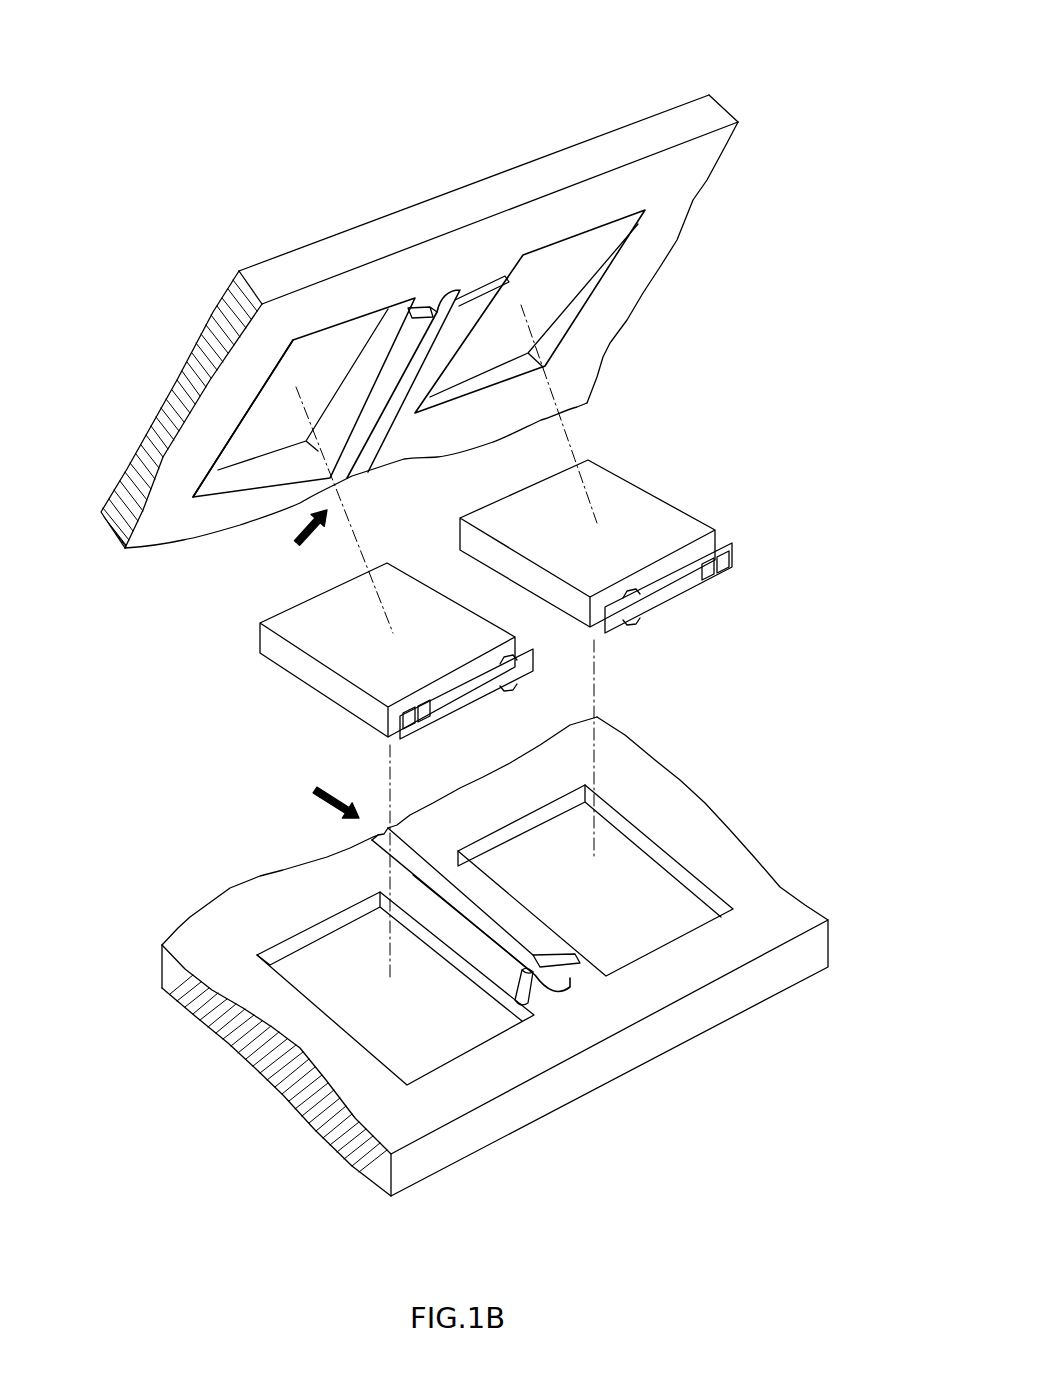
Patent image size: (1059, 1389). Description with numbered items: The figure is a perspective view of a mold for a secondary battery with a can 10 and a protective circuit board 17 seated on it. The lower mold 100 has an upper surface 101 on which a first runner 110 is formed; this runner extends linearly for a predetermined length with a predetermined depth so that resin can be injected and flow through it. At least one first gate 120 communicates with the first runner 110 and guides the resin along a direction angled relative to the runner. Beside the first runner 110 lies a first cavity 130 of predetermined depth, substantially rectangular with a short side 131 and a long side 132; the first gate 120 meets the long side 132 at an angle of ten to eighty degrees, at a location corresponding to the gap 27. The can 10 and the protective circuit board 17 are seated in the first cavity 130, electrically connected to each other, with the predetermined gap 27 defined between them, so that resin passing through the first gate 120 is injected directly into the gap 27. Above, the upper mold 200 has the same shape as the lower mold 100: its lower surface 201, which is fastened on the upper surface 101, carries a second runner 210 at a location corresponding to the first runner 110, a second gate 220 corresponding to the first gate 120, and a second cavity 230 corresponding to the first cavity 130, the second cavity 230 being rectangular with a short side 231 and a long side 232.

The upper mold 200 is at (729, 103).
The lower surface 201 is at (671, 193).
The second runner 210 is at (466, 285).
The second gate 220 is at (427, 305).
The second cavity 230 is at (315, 355).
The short side 231 is at (367, 289).
The long side 232 is at (263, 383).
The can 10 is at (633, 500).
The gap 27 is at (718, 533).
The protective circuit board 17 is at (687, 597).
The lower mold 100 is at (733, 830).
The upper surface 101 is at (663, 805).
The first runner 110 is at (413, 875).
The first gate 120 is at (580, 974).
The first cavity 130 is at (410, 1052).
The short side 131 is at (500, 992).
The long side 132 is at (512, 1000).